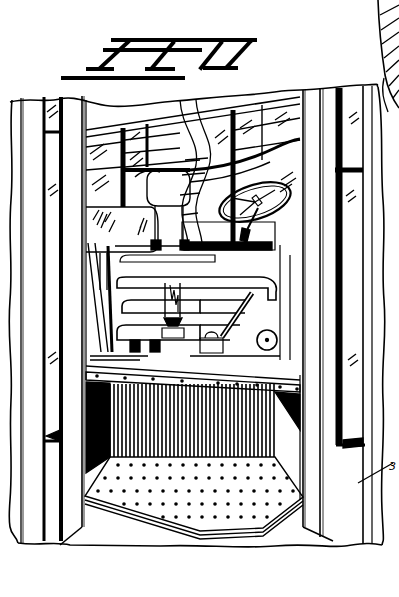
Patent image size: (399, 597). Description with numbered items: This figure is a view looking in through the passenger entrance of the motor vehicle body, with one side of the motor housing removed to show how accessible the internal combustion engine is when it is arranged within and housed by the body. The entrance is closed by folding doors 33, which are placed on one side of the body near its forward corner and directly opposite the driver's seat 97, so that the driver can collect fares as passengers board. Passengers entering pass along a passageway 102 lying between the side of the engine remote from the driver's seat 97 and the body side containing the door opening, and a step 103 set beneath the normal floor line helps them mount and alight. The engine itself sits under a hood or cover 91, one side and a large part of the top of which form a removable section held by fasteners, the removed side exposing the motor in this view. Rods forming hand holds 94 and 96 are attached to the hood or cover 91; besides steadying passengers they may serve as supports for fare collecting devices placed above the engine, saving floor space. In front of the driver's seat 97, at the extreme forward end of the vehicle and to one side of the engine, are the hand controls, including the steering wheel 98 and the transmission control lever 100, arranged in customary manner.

The doors 33 is at (46, 320).
The hood or cover 91 is at (100, 297).
The hand hold 94 is at (210, 155).
The hand hold 96 is at (162, 210).
The driver's seat 97 is at (250, 201).
The steering wheel 98 is at (280, 152).
The transmission control lever 100 is at (214, 226).
The passageway 102 is at (133, 365).
The step 103 is at (152, 507).